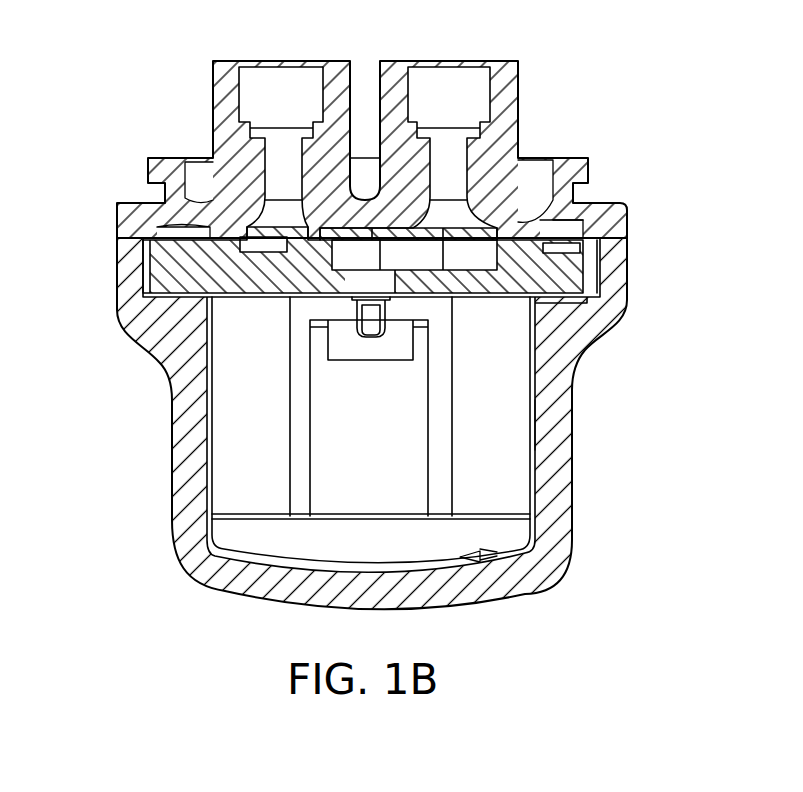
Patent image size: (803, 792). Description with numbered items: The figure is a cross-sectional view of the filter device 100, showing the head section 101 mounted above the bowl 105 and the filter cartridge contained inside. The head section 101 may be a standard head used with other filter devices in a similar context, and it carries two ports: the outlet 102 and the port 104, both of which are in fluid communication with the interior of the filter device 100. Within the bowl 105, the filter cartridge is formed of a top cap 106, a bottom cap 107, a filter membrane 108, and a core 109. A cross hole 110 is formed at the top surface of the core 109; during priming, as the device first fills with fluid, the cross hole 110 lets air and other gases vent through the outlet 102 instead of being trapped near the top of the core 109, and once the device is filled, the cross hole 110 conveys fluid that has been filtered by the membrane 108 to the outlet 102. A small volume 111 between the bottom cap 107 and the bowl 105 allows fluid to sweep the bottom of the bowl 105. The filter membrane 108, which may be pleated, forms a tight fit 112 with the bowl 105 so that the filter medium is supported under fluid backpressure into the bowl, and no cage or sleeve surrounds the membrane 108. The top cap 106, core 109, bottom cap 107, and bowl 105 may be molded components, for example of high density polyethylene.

The filter device 100 is at (615, 470).
The head section 101 is at (610, 220).
The outlet 102 is at (473, 89).
The port 104 is at (253, 83).
The bowl 105 is at (610, 307).
The top cap 106 is at (143, 270).
The bottom cap 107 is at (227, 528).
The filter membrane 108 is at (233, 468).
The core 109 is at (300, 403).
The cross hole 110 is at (369, 338).
The small volume 111 is at (497, 560).
The tight fit 112 is at (543, 423).